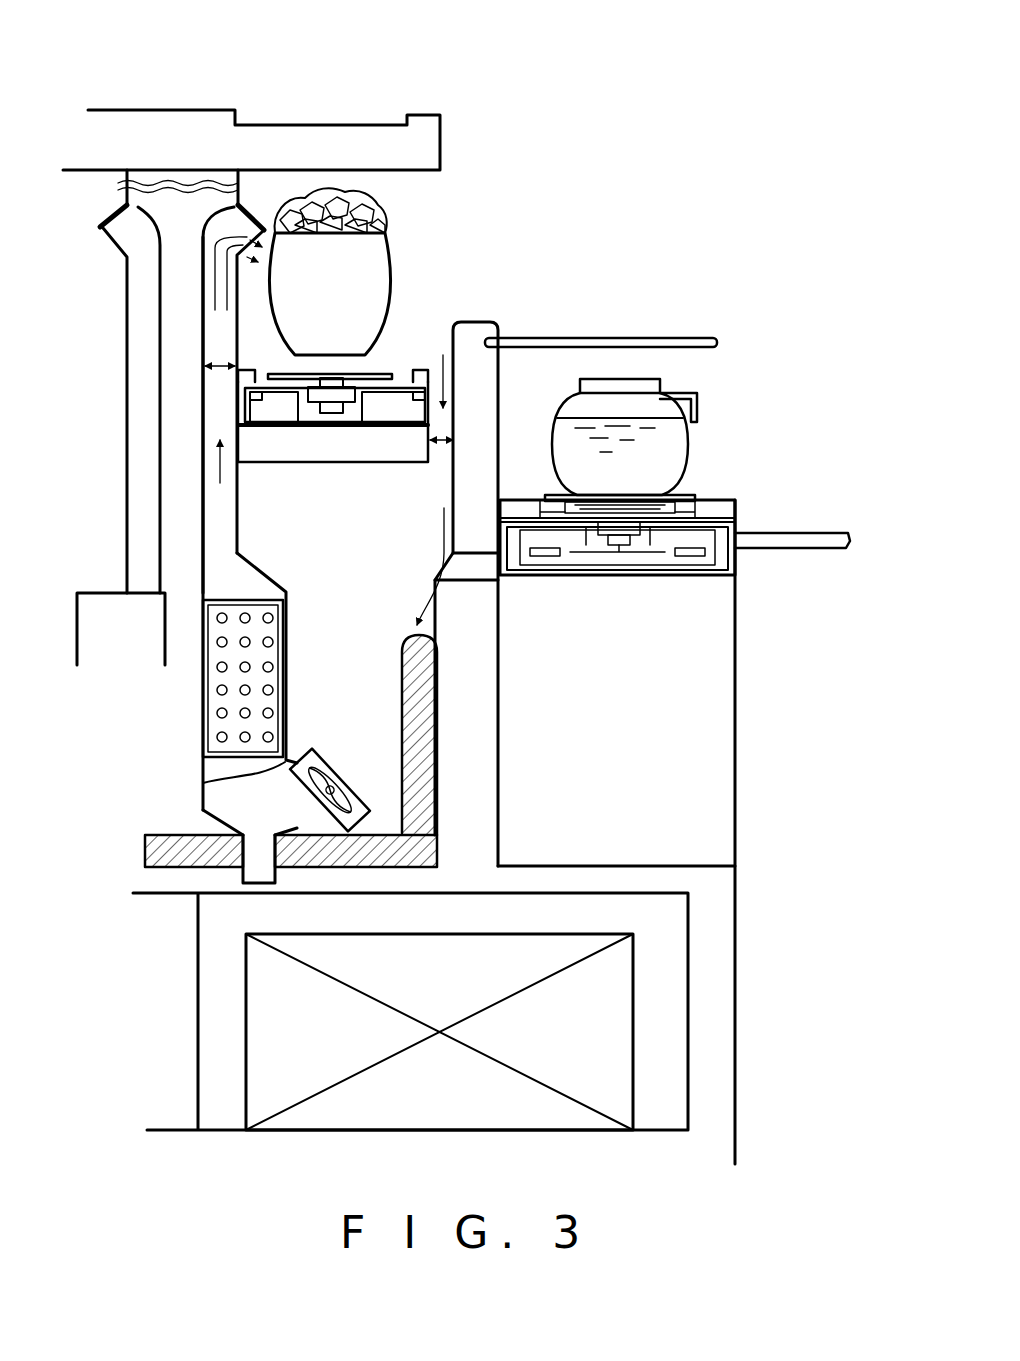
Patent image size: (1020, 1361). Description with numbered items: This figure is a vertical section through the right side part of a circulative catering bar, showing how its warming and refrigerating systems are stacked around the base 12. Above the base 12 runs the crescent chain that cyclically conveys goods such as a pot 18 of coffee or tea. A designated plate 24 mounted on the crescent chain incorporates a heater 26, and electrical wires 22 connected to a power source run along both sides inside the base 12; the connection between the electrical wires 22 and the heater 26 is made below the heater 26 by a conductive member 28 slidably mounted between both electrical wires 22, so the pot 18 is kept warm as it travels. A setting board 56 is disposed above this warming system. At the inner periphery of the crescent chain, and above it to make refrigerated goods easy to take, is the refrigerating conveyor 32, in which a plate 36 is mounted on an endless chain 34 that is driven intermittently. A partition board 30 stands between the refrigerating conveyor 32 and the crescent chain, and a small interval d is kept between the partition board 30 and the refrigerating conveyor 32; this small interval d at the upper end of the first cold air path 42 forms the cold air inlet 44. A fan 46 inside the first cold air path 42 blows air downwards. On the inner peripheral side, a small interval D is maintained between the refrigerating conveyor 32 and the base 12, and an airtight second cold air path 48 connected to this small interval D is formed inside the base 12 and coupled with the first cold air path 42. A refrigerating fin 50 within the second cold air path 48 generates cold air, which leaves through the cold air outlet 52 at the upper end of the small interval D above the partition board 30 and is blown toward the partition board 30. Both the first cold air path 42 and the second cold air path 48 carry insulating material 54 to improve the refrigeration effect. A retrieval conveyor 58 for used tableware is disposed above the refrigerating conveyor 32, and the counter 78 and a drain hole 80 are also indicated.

The base 12 is at (716, 862).
The pot 18 is at (683, 438).
The electrical wires 22 is at (567, 560).
The designated plate 24 is at (690, 496).
The heater 26 is at (733, 560).
The conductive member 28 is at (652, 553).
The partition board 30 is at (477, 322).
The refrigerating conveyor 32 is at (310, 425).
The endless chain 34 is at (298, 428).
The plate 36 is at (253, 397).
The first cold air path 42 is at (383, 760).
The cold air inlet 44 is at (443, 420).
The fan 46 is at (285, 778).
The second cold air path 48 is at (238, 807).
The refrigerating fin 50 is at (200, 692).
The cold air outlet 52 is at (274, 233).
The insulating material 54 is at (147, 855).
The setting board 56 is at (640, 338).
The retrieval conveyor 58 is at (341, 125).
The counter 78 is at (793, 535).
The drain hole 80 is at (240, 883).
The small interval D is at (250, 383).
The small interval d is at (442, 446).